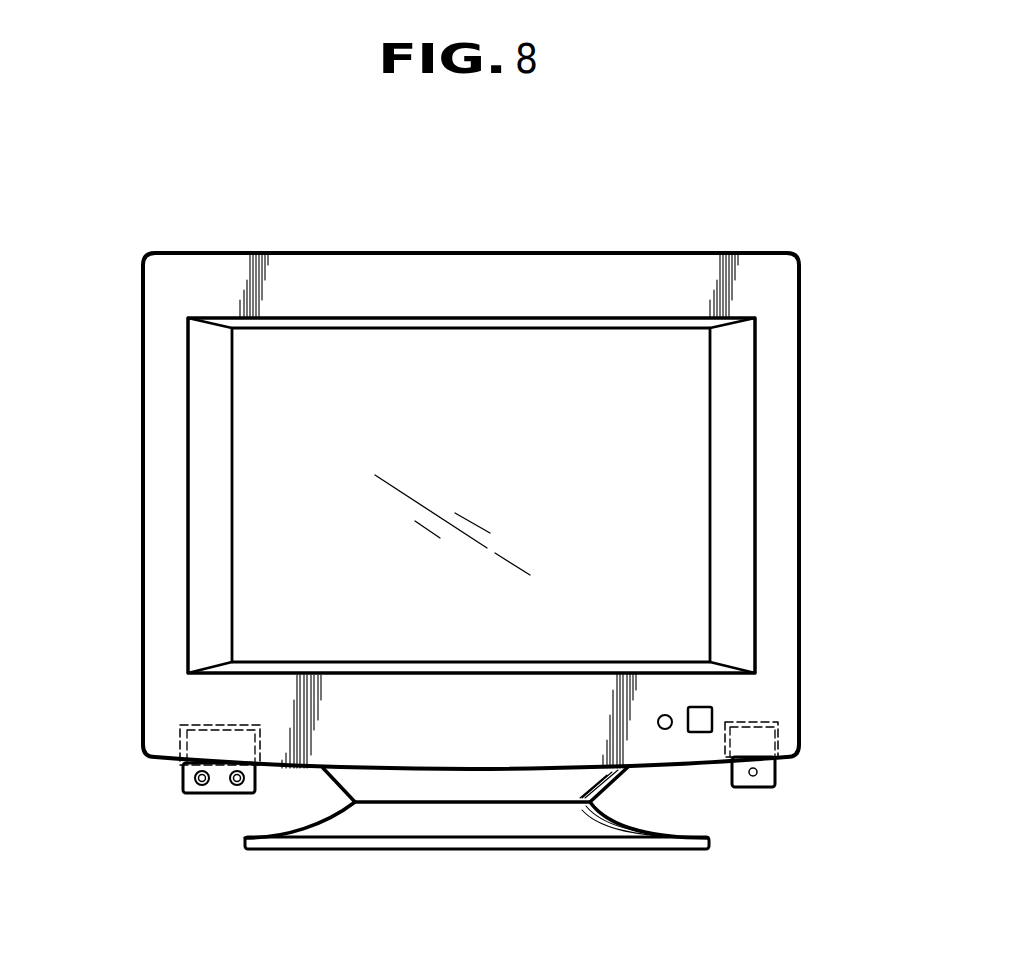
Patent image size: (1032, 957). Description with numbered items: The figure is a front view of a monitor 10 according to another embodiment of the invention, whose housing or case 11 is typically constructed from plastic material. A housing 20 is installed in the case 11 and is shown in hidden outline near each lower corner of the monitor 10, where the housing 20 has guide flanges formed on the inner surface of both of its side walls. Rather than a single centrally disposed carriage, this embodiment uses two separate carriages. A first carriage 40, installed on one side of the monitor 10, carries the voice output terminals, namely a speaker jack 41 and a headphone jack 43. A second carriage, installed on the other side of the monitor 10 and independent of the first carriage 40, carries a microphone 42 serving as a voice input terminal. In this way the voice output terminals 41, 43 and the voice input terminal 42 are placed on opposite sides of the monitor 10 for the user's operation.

The monitor 10 is at (453, 368).
The case 11 is at (478, 745).
The housing 20 is at (180, 726).
The first carriage 40 is at (183, 775).
The speaker jack 41 is at (200, 784).
The microphone 42 is at (756, 776).
The headphone jack 43 is at (237, 786).